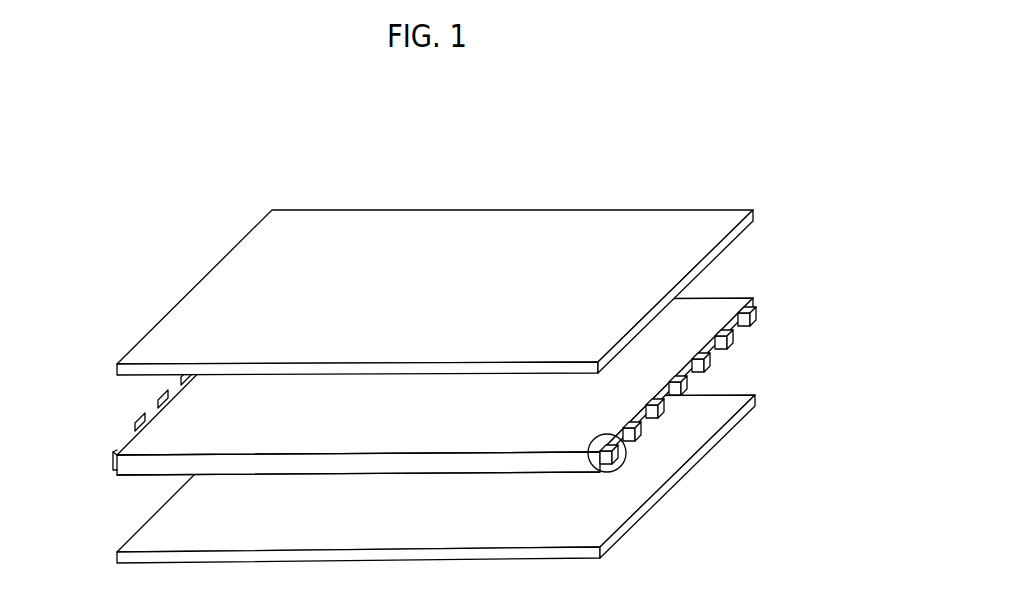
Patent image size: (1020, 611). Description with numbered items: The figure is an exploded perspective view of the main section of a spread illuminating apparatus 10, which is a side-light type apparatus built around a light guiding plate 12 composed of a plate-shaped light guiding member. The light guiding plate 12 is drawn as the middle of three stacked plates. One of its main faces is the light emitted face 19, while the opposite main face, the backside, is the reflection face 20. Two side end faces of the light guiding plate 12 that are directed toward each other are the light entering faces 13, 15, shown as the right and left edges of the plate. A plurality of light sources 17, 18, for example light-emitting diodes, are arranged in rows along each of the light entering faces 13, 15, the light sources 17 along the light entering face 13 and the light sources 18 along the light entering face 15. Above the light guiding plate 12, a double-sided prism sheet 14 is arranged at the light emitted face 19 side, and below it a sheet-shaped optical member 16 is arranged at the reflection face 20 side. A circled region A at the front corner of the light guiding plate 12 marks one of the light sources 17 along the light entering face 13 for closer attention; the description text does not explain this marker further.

The spread illuminating apparatus 10 is at (449, 329).
The light guiding plate 12 is at (723, 296).
The light entering face 13 is at (757, 323).
The double-sided prism sheet 14 is at (622, 233).
The light entering face 15 is at (153, 412).
The sheet-shaped optical member 16 is at (727, 393).
The light source 17 is at (645, 430).
The light source 18 is at (140, 424).
The light emitted face 19 is at (193, 440).
The reflection face 20 is at (157, 474).
The enlarged portion A is at (625, 467).